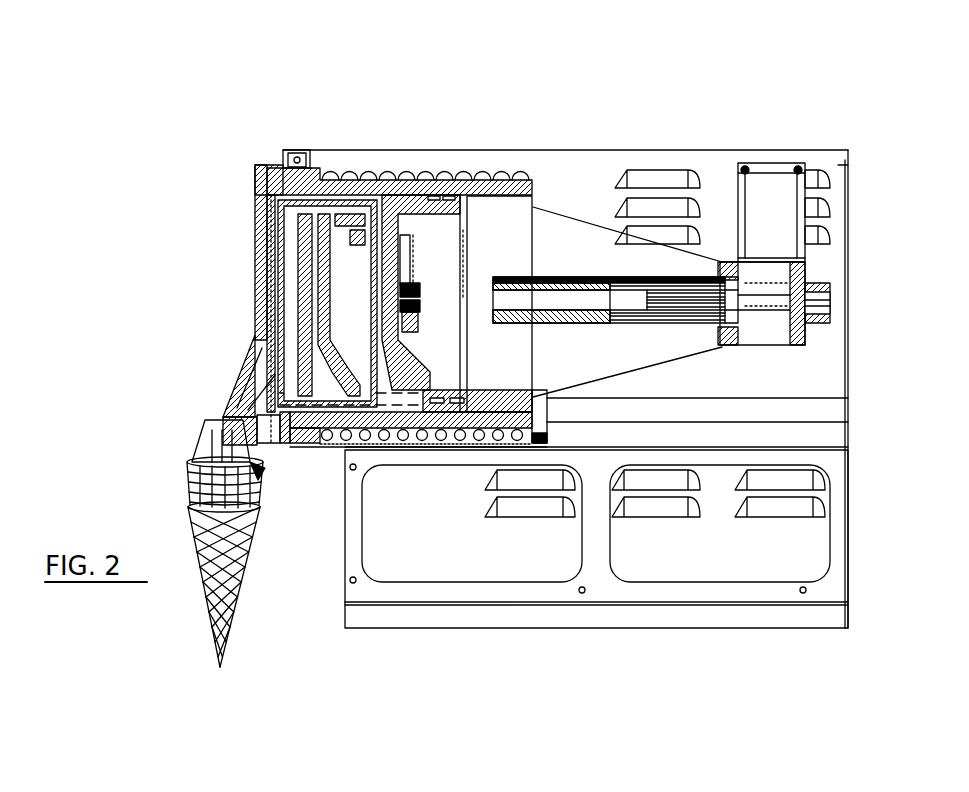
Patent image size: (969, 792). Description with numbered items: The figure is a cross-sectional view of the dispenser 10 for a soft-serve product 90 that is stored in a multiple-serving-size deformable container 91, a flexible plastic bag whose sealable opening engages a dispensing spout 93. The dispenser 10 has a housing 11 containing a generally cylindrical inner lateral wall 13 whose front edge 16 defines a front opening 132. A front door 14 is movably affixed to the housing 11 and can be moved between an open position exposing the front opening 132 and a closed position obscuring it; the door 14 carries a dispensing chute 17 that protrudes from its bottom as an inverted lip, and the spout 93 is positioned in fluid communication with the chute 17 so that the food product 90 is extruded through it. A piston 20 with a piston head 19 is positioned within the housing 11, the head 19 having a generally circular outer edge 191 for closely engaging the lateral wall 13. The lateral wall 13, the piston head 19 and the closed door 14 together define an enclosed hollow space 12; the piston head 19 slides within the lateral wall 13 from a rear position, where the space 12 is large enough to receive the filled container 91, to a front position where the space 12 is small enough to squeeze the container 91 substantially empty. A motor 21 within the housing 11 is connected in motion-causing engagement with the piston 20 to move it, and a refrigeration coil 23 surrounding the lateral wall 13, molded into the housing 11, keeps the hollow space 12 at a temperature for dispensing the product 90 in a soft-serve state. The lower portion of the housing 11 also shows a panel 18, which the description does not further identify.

The dispenser 10 is at (718, 102).
The housing 11 is at (583, 152).
The enclosed hollow space 12 is at (415, 190).
The inner lateral wall 13 is at (362, 182).
The front door 14 is at (258, 192).
The front edge 16 is at (275, 168).
The dispensing chute 17 is at (240, 405).
The lower panel 18 is at (411, 447).
The piston head 19 is at (403, 277).
The outer edge 191 is at (398, 256).
The piston 20 is at (480, 305).
The motor 21 is at (766, 200).
The refrigeration coil 23 is at (528, 182).
The soft-serve product 90 is at (205, 448).
The deformable container 91 is at (272, 243).
The dispensing spout 93 is at (240, 372).
The front opening 132 is at (262, 284).